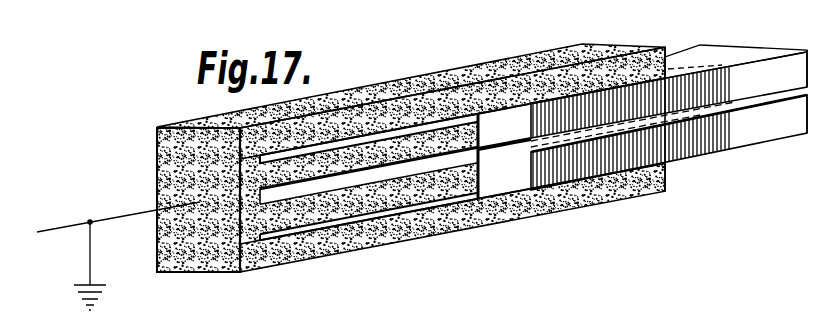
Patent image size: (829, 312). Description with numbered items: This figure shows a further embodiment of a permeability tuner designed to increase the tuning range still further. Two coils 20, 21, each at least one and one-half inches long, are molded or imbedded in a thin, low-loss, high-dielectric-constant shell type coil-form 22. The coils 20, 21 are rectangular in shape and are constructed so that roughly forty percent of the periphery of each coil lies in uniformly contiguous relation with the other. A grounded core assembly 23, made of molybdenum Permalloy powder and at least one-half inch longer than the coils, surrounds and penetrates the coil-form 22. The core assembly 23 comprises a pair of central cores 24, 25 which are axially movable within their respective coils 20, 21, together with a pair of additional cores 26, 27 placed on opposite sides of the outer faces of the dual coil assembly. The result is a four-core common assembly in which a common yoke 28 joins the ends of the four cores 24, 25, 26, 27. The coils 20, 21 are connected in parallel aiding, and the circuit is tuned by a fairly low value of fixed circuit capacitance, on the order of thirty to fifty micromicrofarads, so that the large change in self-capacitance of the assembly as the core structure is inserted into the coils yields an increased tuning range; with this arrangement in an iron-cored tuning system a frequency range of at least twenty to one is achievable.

The coil 20 is at (738, 84).
The coil 21 is at (735, 129).
The shell type coil-form 22 is at (766, 40).
The core assembly 23 is at (373, 176).
The central core 24 is at (370, 170).
The central core 25 is at (370, 216).
The additional core 26 is at (387, 92).
The additional core 27 is at (385, 244).
The common yoke 28 is at (214, 264).